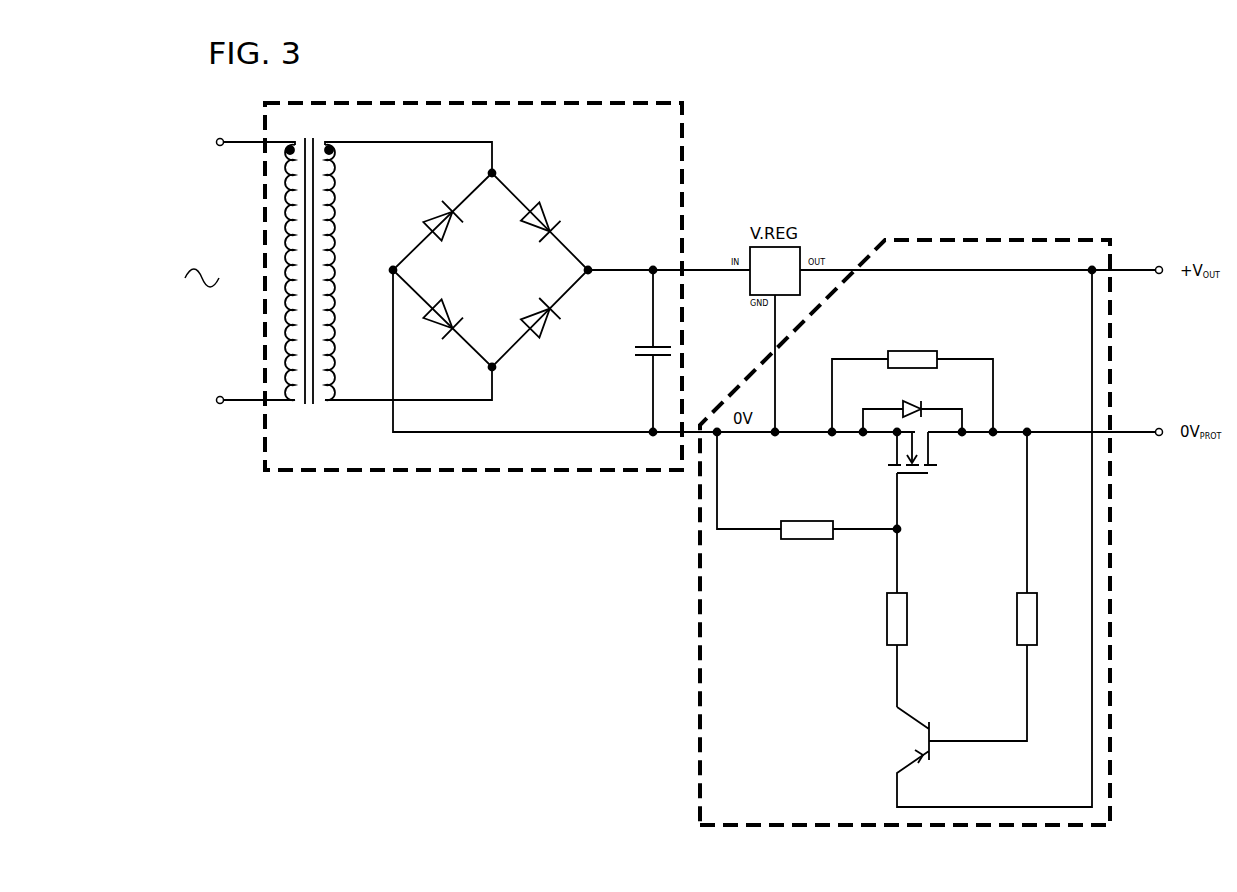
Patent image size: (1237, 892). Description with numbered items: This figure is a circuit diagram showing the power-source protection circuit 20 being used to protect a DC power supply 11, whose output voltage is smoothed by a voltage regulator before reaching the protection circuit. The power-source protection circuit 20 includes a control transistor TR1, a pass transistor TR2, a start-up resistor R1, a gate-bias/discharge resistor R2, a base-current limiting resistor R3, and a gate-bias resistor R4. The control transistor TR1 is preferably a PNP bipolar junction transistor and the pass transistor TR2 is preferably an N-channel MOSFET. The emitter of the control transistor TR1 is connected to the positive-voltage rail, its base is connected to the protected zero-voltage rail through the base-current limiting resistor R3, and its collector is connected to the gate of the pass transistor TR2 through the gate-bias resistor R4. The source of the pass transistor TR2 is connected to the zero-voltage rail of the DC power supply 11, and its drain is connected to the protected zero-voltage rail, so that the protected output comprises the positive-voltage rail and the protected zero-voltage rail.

The DC power supply 11 is at (550, 309).
The power-source protection circuit 20 is at (905, 551).
The start-up resistor R1 is at (912, 381).
The gate-bias/discharge resistor R2 is at (807, 498).
The base-current limiting resistor R3 is at (1011, 538).
The gate-bias resistor R4 is at (881, 650).
The control transistor TR1 is at (983, 538).
The pass transistor TR2 is at (894, 452).